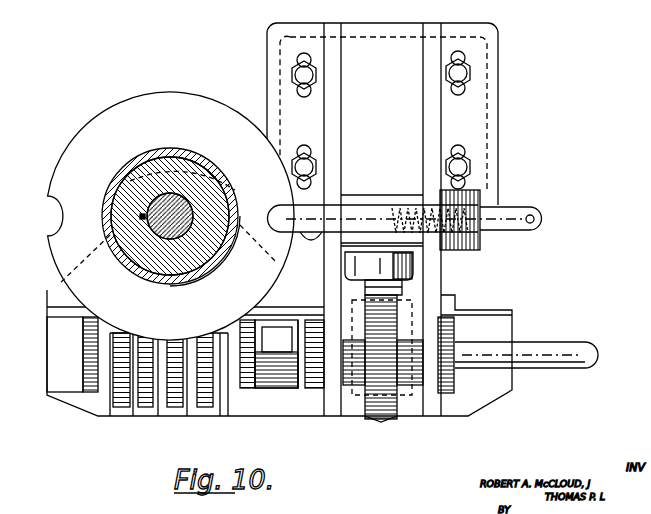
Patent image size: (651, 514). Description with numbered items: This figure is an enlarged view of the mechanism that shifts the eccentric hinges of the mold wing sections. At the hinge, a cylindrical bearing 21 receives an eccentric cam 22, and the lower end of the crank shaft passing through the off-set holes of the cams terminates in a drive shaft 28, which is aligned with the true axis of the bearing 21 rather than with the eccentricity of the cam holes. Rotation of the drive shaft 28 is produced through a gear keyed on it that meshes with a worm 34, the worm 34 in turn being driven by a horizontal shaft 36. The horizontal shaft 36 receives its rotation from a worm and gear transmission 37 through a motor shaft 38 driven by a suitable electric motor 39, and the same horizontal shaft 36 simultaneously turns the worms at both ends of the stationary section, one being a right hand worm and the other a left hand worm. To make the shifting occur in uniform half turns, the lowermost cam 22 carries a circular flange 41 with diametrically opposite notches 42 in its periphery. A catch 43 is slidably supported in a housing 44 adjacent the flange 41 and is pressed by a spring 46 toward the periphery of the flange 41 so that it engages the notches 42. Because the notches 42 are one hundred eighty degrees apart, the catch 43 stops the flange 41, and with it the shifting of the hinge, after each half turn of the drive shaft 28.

The cylindrical bearing 21 is at (198, 166).
The eccentric cam 22 is at (155, 167).
The drive shaft 28 is at (158, 234).
The worm 34 is at (178, 408).
The horizontal shaft 36 is at (538, 352).
The worm and gear transmission 37 is at (385, 420).
The motor shaft 38 is at (402, 287).
The electric motor 39 is at (413, 269).
The circular flange 41 is at (128, 108).
The notches 42 is at (48, 230).
The catch 43 is at (309, 240).
The housing 44 is at (358, 200).
The spring 46 is at (403, 200).